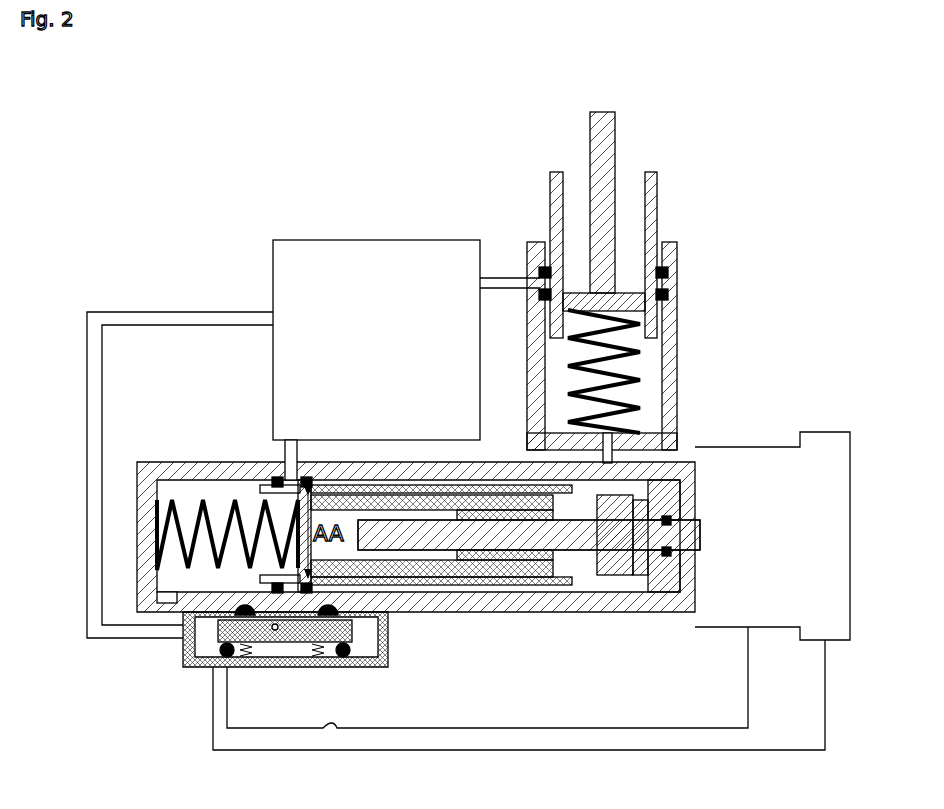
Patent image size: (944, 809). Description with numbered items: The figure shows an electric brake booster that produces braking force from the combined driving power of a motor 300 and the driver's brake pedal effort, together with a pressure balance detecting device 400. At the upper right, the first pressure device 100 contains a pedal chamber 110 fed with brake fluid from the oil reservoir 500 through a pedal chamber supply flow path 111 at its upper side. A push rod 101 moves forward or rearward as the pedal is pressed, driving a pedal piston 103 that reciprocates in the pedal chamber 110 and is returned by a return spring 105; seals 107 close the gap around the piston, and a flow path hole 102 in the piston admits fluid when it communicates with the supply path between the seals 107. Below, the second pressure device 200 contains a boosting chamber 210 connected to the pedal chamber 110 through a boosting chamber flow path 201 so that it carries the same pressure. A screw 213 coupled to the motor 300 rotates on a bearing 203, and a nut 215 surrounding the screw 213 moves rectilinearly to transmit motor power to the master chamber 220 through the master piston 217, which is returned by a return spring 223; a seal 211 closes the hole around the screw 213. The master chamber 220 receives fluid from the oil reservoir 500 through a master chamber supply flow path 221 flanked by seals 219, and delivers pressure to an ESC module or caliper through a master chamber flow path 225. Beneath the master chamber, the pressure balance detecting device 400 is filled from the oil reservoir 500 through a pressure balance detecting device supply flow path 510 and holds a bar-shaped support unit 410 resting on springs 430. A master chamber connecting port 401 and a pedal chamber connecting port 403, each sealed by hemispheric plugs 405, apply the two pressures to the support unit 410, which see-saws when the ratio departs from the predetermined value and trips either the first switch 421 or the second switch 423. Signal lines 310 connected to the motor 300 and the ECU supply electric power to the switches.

The first pressure device 100 is at (775, 203).
The push rod 101 is at (590, 150).
The flow path hole 102 is at (647, 318).
The pedal piston 103 is at (658, 212).
The return spring 105 is at (622, 340).
The seals 107 is at (668, 272).
The pedal chamber 110 is at (648, 366).
The pedal chamber supply flow path 111 is at (507, 276).
The second pressure device 200 is at (684, 620).
The boosting chamber flow path 201 is at (588, 497).
The bearing 203 is at (660, 556).
The boosting chamber 210 is at (650, 482).
The seal 211 is at (670, 551).
The screw 213 is at (613, 560).
The nut 215 is at (537, 557).
The master piston 217 is at (502, 580).
The seals 219 is at (358, 592).
The master chamber 220 is at (182, 494).
The master chamber supply flow path 221 is at (285, 451).
The return spring 223 is at (217, 517).
The master chamber flow path 225 is at (177, 603).
The motor 300 is at (840, 432).
The signal lines 310 is at (827, 668).
The pressure balance detecting device 400 is at (373, 650).
The master chamber connecting port 401 is at (265, 597).
The pedal chamber connecting port 403 is at (335, 600).
The hemispheric plugs 405 is at (305, 618).
The support unit 410 is at (227, 545).
The first switch 421 is at (220, 650).
The second switch 423 is at (349, 657).
The springs 430 is at (236, 655).
The oil reservoir 500 is at (372, 256).
The pressure balance detecting device supply flow path 510 is at (150, 318).